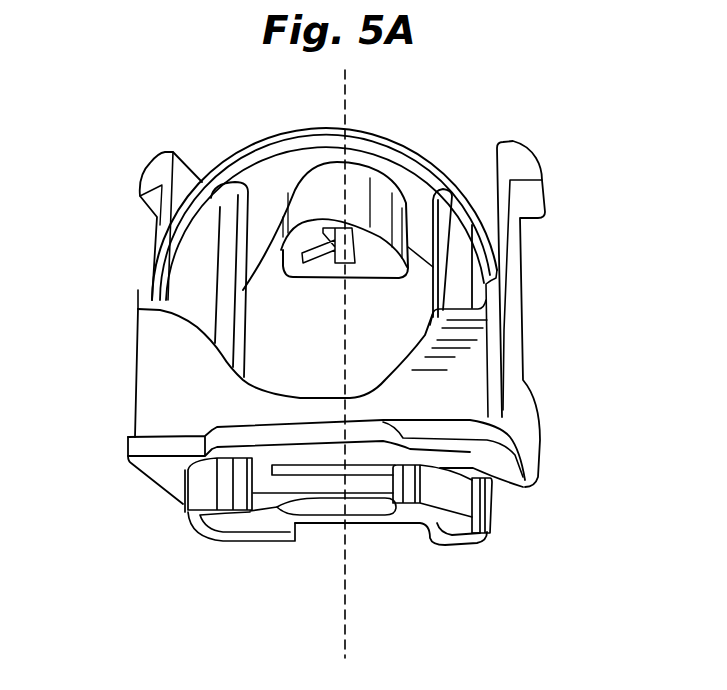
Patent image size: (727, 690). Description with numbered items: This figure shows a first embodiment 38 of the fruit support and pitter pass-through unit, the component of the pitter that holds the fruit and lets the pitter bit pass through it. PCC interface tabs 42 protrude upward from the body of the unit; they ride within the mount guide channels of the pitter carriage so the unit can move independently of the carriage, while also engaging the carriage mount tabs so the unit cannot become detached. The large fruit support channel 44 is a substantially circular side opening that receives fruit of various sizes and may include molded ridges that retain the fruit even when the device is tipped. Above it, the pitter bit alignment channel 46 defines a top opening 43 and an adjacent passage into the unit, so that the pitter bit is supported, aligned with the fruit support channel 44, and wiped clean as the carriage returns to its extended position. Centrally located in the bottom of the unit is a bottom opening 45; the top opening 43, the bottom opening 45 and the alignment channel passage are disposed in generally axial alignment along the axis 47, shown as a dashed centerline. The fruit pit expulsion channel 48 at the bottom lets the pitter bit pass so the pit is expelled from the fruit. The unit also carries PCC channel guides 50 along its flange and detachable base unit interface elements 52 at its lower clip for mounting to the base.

The first embodiment 38 is at (232, 128).
The PCC interface tabs 42 is at (160, 158).
The top opening 43 is at (347, 126).
The fruit support channel 44 is at (286, 355).
The bottom opening 45 is at (357, 505).
The pitter bit alignment channel 46 is at (358, 180).
The axis 47 is at (343, 634).
The fruit pit expulsion channel 48 is at (318, 503).
The PCC channel guides 50 is at (430, 437).
The detachable base unit interface elements 52 is at (497, 518).